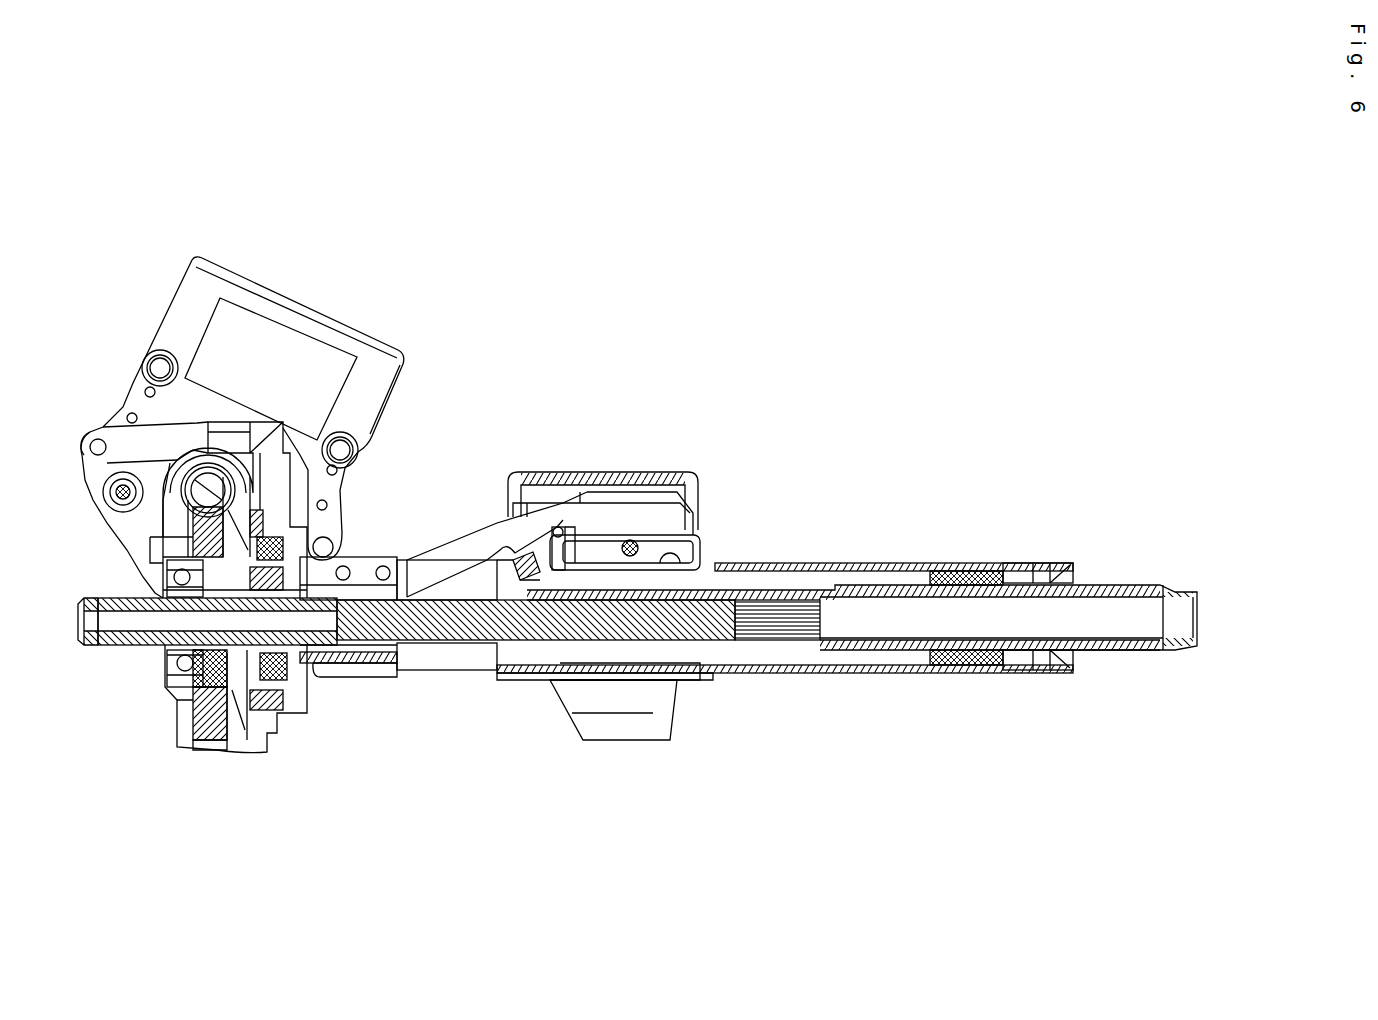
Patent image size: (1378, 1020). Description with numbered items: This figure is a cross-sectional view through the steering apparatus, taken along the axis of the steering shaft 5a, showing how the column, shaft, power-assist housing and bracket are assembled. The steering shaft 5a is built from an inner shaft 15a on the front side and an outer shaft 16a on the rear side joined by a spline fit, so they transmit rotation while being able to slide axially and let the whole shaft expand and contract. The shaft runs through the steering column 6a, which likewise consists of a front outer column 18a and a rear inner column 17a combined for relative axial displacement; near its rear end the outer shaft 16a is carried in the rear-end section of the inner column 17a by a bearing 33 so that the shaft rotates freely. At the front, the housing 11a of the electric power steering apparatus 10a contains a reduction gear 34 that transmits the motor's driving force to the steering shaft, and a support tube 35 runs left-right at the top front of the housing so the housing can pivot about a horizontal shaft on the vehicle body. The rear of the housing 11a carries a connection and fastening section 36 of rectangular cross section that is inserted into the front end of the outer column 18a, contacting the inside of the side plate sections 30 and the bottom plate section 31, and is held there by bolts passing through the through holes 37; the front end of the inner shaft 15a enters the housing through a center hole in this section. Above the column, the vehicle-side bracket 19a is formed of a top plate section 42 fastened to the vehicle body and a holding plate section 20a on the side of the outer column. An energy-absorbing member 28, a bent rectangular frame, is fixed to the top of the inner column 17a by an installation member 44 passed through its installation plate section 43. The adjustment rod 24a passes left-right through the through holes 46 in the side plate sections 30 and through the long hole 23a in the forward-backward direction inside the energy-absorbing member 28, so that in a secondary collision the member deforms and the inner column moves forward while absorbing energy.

The steering shaft 5a is at (1117, 587).
The steering column 6a is at (890, 564).
The electric power steering apparatus 10a is at (172, 727).
The housing 11a is at (170, 692).
The inner shaft 15a is at (440, 637).
The outer shaft 16a is at (1107, 651).
The inner column 17a is at (885, 674).
The outer column 18a is at (500, 681).
The vehicle-side bracket 19a is at (670, 477).
The holding plate section 20a is at (625, 700).
The long hole in the forward-backward direction 23a is at (690, 565).
The adjustment rod 24a is at (628, 535).
The energy-absorbing member 28 is at (690, 512).
The side plate section 30 is at (443, 557).
The bottom plate section 31 is at (453, 672).
The bearing 33 is at (1053, 568).
The reduction gear 34 is at (203, 745).
The support tube 35 is at (110, 475).
The connection and fastening section 36 is at (350, 678).
The through hole 37 is at (383, 567).
The top plate section 42 is at (597, 472).
The installation plate section 43 is at (525, 565).
The installation member 44 is at (557, 527).
The through hole 46 is at (617, 565).